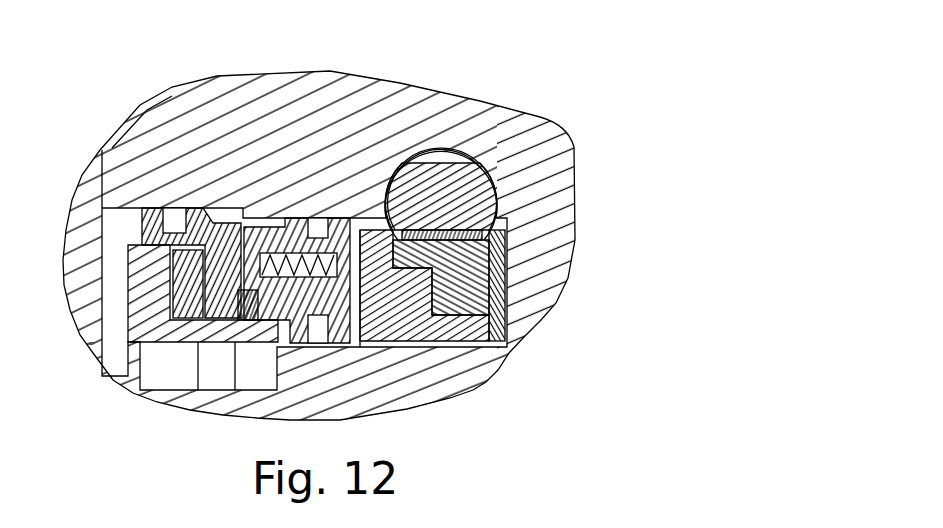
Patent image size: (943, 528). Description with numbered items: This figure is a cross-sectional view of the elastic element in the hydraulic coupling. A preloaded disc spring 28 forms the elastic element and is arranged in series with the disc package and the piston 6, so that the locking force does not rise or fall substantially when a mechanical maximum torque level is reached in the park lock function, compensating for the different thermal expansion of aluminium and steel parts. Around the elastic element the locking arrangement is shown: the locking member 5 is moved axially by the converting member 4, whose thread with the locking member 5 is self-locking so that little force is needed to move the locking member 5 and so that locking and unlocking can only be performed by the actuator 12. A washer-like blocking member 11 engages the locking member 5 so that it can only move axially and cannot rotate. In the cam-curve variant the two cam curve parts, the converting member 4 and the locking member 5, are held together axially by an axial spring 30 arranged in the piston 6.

The converting member 4 is at (500, 240).
The locking member 5 is at (420, 318).
The piston 6 is at (237, 250).
The blocking member 11 is at (497, 290).
The actuator 12 is at (462, 175).
The preloaded disc spring 28 is at (185, 255).
The axial spring 30 is at (300, 240).